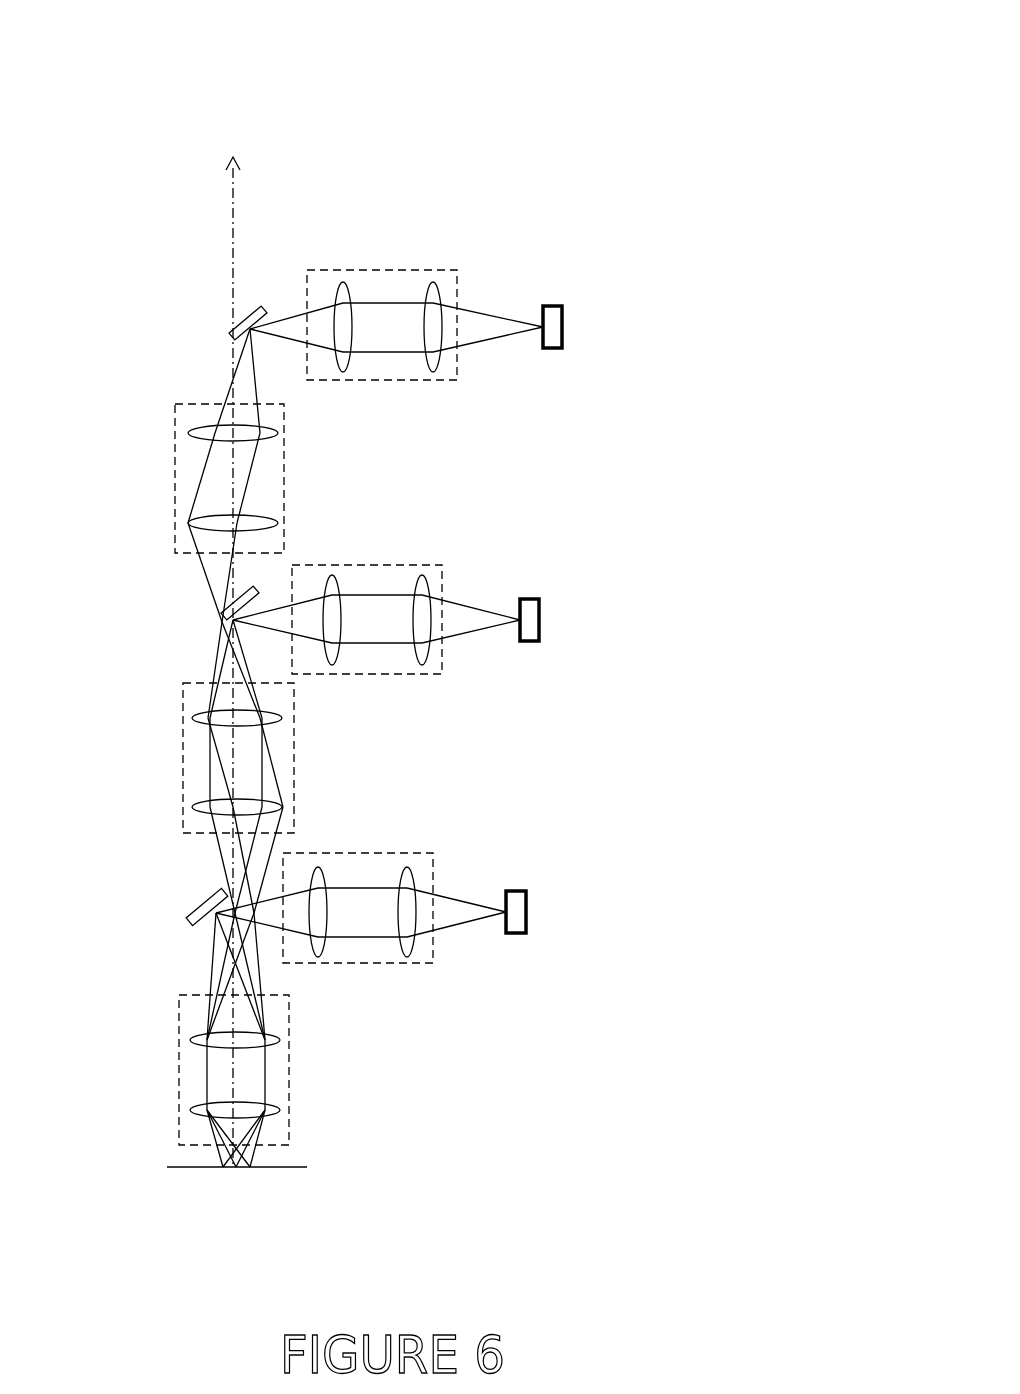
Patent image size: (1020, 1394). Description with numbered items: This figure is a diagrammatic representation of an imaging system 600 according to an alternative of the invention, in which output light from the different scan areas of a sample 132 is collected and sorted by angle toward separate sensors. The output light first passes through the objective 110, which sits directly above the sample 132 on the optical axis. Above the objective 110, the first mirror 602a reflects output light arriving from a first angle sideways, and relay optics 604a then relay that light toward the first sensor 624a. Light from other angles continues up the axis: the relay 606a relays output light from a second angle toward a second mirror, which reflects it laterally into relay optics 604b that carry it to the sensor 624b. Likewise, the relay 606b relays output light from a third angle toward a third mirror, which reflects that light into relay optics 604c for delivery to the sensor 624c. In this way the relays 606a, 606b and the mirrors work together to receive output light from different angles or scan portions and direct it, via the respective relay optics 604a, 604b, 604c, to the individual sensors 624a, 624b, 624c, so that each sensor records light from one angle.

The optical detection system 600 is at (672, 90).
The relay optics 604a is at (400, 852).
The relay optics 604b is at (411, 564).
The relay optics 604c is at (427, 268).
The sensor 624a is at (517, 890).
The sensor 624b is at (537, 598).
The sensor 624c is at (551, 310).
The relay 606a is at (185, 768).
The relay 606b is at (178, 490).
The first mirror 602a is at (193, 918).
The objective 110 is at (180, 1042).
The sample 132 is at (283, 1168).